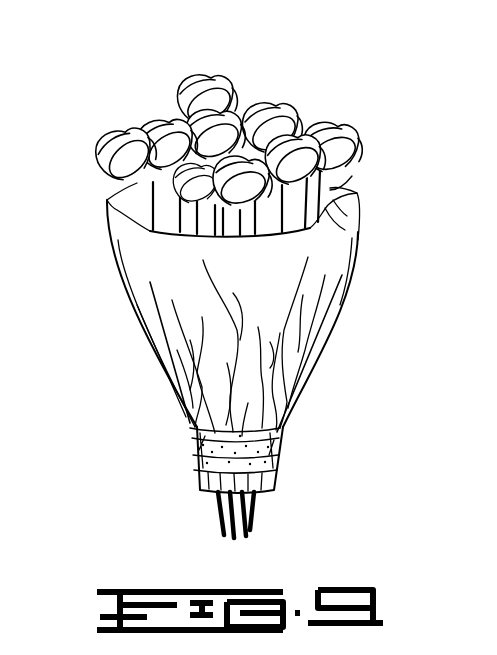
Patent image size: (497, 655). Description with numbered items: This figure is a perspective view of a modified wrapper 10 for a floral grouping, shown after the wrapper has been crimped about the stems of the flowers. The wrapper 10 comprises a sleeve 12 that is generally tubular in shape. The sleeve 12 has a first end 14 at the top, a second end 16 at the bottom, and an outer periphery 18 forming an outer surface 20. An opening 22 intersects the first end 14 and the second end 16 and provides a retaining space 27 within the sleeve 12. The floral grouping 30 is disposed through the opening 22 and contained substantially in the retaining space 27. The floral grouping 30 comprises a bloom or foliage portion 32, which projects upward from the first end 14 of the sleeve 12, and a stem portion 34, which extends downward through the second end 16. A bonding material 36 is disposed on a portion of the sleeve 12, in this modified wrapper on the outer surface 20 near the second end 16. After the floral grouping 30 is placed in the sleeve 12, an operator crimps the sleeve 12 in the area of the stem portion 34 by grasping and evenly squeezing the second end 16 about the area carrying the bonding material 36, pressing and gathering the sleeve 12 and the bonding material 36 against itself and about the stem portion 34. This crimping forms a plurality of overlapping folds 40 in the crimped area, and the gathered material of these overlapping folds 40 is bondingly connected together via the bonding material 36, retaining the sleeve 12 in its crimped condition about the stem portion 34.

The wrapper 10 is at (152, 78).
The sleeve 12 is at (352, 290).
The first end 14 is at (107, 200).
The second end 16 is at (207, 492).
The outer periphery 18 is at (268, 302).
The outer surface 20 is at (167, 292).
The opening 22 is at (360, 196).
The retaining space 27 is at (352, 176).
The floral grouping 30 is at (284, 98).
The bloom or foliage portion 32 is at (308, 150).
The stem portion 34 is at (255, 503).
The bonding material 36 is at (190, 443).
The overlapping folds 40 is at (280, 400).